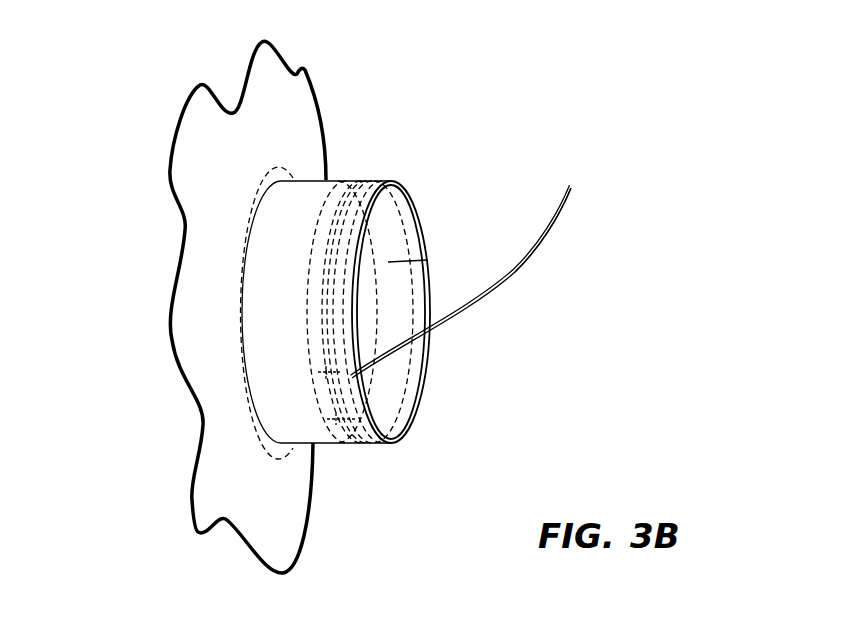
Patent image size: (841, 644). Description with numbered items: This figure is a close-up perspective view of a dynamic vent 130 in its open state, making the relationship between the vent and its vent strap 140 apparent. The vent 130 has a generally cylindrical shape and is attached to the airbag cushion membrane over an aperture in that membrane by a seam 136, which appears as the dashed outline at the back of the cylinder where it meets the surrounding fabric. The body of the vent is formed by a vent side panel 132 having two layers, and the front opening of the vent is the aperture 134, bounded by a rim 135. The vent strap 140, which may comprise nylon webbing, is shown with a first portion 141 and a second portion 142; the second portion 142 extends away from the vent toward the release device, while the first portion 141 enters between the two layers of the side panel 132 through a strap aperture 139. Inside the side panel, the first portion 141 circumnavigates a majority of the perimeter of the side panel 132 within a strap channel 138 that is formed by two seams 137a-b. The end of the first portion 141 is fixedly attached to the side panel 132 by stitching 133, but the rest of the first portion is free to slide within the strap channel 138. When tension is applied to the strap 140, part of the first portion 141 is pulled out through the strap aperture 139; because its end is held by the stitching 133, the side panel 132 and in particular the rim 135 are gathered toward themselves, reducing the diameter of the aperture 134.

The dynamic vent 130 is at (480, 186).
The vent side panel 132 is at (263, 235).
The stitching 133 is at (322, 378).
The aperture 134 is at (427, 260).
The rim 135 is at (407, 437).
The seam 136 is at (277, 173).
The seams 137a-b is at (343, 312).
The strap channel 138 is at (313, 350).
The strap aperture 139 is at (337, 418).
The vent strap 140 is at (560, 263).
The first portion 141 is at (340, 207).
The second portion 142 is at (490, 300).